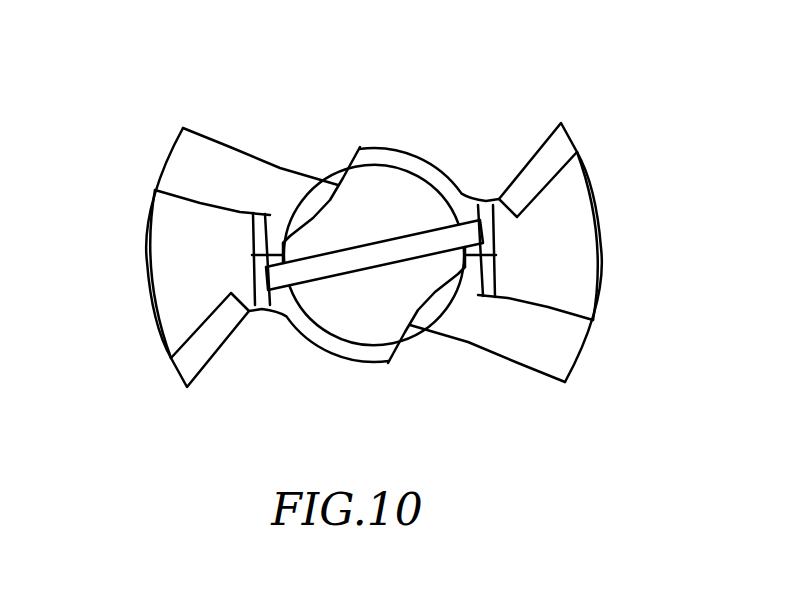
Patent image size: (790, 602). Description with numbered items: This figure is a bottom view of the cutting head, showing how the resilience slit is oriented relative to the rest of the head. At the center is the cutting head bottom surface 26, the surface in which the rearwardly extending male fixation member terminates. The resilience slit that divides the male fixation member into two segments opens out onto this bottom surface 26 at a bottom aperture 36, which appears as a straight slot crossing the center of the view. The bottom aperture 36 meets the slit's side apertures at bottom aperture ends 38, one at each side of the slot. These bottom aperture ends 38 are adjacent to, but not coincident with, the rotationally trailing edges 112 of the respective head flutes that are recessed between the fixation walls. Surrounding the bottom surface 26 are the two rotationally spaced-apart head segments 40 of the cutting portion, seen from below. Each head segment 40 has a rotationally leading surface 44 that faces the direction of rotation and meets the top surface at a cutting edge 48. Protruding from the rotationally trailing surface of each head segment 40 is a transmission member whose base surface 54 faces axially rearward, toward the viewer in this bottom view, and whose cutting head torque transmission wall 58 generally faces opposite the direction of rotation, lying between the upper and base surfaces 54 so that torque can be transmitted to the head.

The cutting head bottom surface 26 is at (373, 205).
The bottom aperture 36 is at (347, 257).
The bottom aperture ends 38 is at (468, 237).
The head segments 40 is at (130, 257).
The rotationally leading surface 44 is at (195, 173).
The cutting edge 48 is at (237, 157).
The base surface 54 is at (173, 310).
The cutting head torque transmission wall 58 is at (200, 357).
The rotationally trailing edges 112 is at (273, 238).